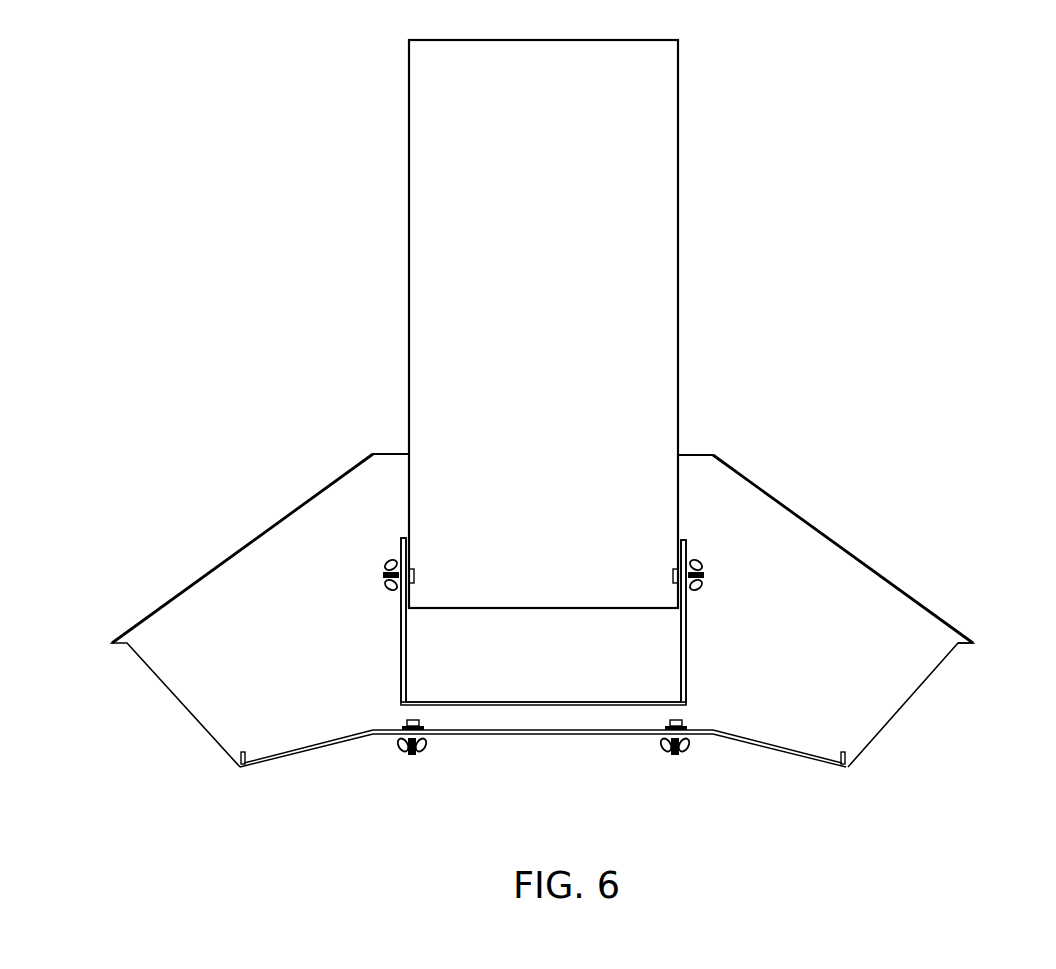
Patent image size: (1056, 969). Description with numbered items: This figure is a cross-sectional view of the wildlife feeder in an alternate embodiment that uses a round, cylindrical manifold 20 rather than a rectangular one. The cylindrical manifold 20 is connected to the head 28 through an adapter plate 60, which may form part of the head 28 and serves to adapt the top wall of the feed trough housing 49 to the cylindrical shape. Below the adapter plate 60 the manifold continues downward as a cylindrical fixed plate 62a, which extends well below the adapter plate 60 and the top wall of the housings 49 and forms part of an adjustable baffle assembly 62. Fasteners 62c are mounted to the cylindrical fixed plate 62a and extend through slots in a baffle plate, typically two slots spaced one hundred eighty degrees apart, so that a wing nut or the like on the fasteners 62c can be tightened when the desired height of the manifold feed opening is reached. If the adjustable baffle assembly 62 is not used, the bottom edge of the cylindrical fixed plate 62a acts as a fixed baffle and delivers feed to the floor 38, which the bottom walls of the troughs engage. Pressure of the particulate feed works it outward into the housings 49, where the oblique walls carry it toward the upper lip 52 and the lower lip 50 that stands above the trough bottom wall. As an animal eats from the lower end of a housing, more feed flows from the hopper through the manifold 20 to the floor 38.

The housing / box 20 is at (623, 205).
The head 28 is at (845, 513).
The floor 38 is at (581, 732).
The feed trough housing 49 is at (212, 592).
The lower lip 50 is at (847, 755).
The upper lip 52 is at (977, 642).
The adapter plate 60 is at (695, 452).
The adjustable baffle assembly 62 is at (697, 547).
The cylindrical fixed plate 62a is at (543, 611).
The fasteners 62c is at (707, 577).